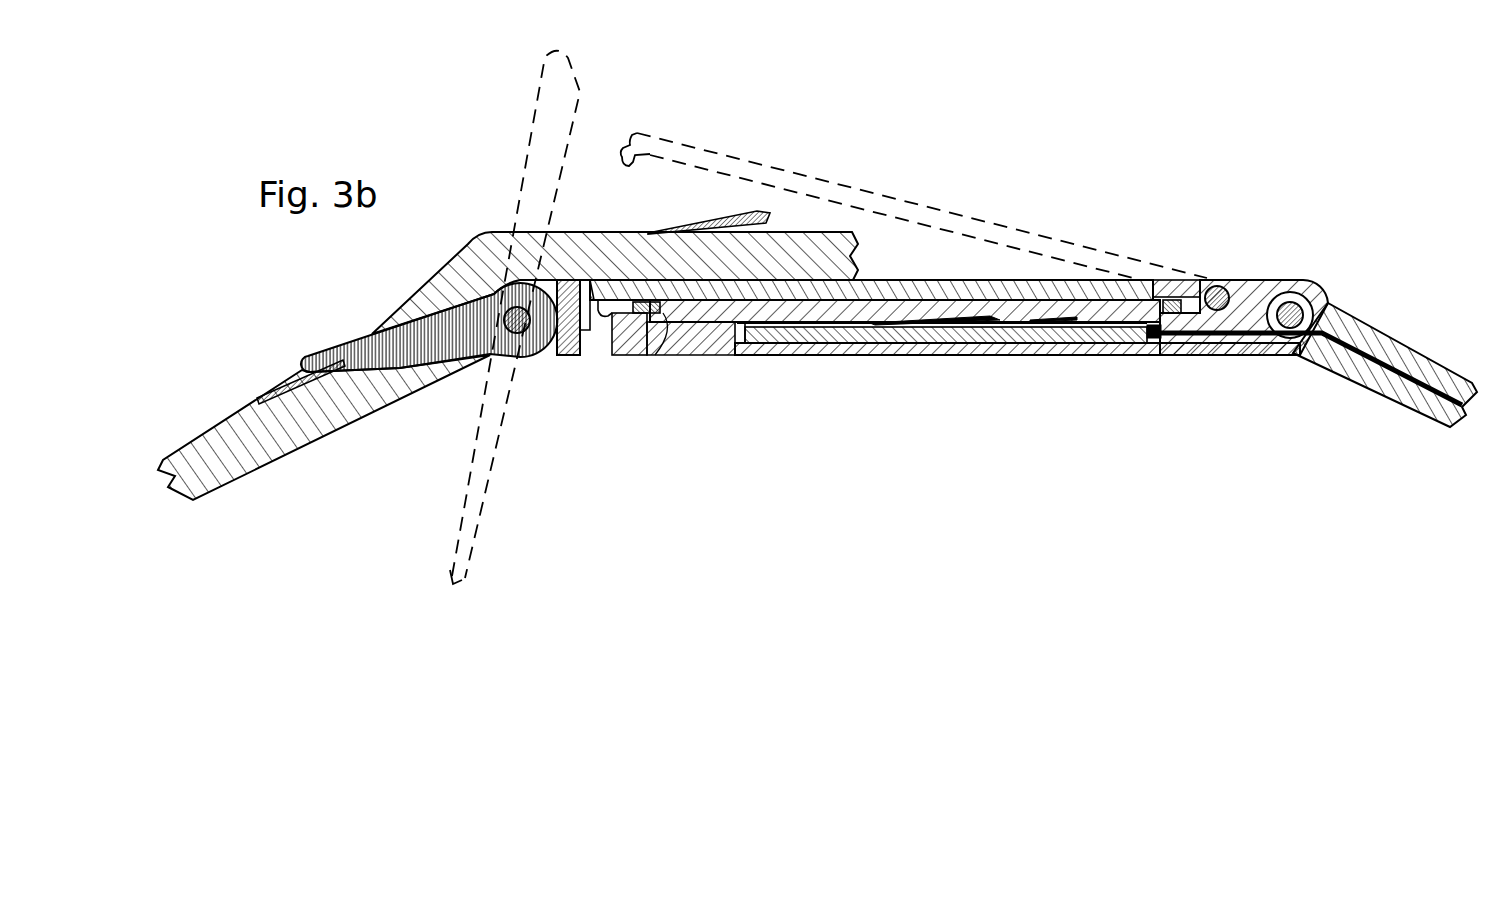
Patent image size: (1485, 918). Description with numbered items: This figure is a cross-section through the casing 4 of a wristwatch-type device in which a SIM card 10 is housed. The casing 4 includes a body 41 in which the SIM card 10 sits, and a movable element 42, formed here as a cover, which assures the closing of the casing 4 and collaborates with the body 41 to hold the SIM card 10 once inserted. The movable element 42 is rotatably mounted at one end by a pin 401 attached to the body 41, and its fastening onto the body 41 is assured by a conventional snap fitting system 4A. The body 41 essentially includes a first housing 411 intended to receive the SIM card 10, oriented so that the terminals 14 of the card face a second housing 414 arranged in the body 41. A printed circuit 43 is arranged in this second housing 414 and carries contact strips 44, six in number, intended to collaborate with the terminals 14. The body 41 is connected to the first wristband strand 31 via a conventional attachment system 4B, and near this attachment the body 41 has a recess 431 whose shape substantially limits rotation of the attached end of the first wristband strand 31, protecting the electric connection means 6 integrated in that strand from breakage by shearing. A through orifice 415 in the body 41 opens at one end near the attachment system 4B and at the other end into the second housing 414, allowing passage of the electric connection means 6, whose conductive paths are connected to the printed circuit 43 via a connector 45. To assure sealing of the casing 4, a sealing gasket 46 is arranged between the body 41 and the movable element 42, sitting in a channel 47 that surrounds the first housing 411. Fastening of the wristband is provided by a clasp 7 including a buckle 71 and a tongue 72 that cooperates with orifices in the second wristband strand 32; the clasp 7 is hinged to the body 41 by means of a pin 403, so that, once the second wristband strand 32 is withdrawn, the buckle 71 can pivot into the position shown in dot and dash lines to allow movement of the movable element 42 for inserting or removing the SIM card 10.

The casing 4 is at (1056, 248).
The snap fitting system 4A is at (591, 253).
The attachment system 4B is at (1290, 384).
The electric connection means 6 is at (1347, 380).
The clasp 7 is at (668, 187).
The buckle 71 is at (746, 212).
The SIM card 10 is at (1102, 307).
The terminals 14 is at (1058, 313).
The first wristband strand 31 is at (1436, 376).
The second wristband strand 32 is at (212, 447).
The body 41 is at (800, 350).
The movable element 42 is at (878, 291).
The printed circuit 43 is at (861, 335).
The contact strips 44 is at (897, 320).
The connector 45 is at (1122, 335).
The sealing gasket 46 is at (1176, 338).
The channel 47 is at (628, 342).
The tongue 72 is at (364, 337).
The pin 401 is at (1214, 286).
The pin 403 is at (518, 335).
The first housing 411 is at (660, 355).
The second housing 414 is at (745, 345).
The through orifice 415 is at (1226, 340).
The recess 431 is at (1327, 327).